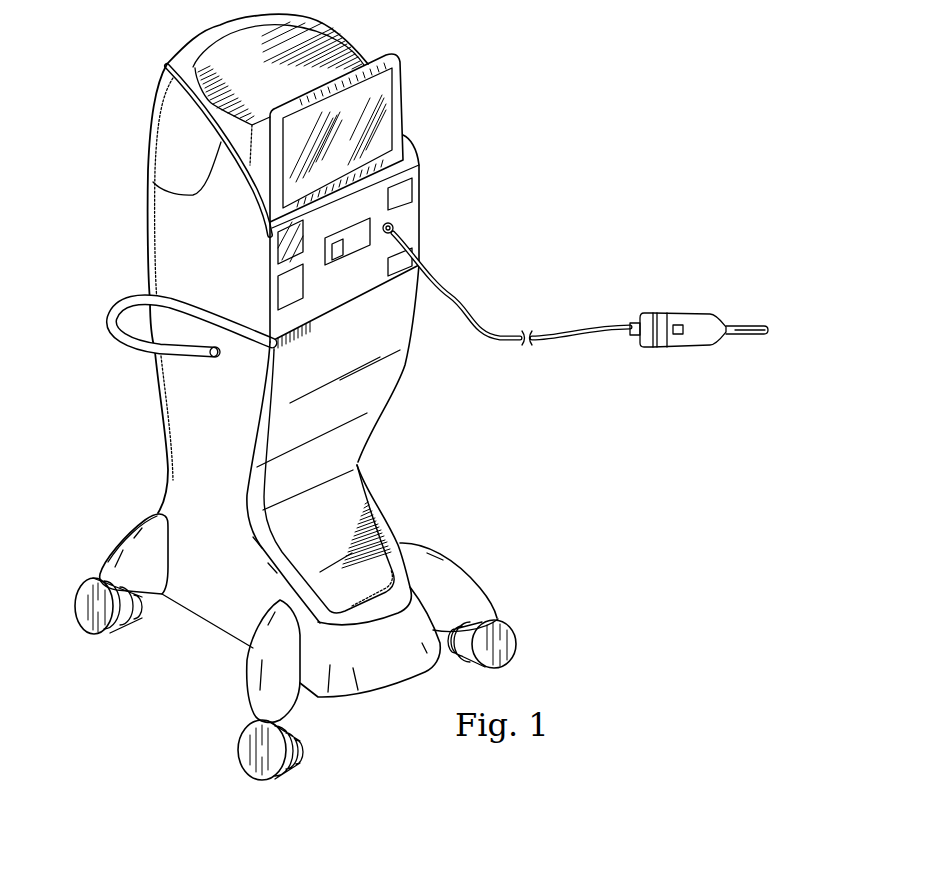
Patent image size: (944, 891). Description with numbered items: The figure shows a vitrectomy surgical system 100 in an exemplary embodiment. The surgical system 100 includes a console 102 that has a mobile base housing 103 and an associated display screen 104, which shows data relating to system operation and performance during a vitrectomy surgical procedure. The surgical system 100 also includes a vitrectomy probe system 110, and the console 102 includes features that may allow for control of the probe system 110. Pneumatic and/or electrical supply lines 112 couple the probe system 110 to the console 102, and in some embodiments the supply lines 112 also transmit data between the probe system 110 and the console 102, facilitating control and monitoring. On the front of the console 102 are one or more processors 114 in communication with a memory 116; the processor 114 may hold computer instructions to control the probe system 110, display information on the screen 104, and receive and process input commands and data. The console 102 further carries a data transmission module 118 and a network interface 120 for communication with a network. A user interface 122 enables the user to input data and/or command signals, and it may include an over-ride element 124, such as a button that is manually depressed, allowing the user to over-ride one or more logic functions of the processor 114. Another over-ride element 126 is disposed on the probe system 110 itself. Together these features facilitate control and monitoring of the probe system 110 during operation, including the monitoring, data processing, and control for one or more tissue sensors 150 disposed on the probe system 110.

The vitrectomy surgical system 100 is at (415, 397).
The console 102 is at (279, 397).
The mobile base housing 103 is at (160, 404).
The display screen 104 is at (405, 83).
The vitrectomy probe system 110 is at (709, 315).
The supply lines 112 is at (497, 335).
The processor 114 is at (277, 249).
The memory 116 is at (277, 289).
The data transmission module 118 is at (405, 192).
The network interface 120 is at (398, 262).
The user interface 122 is at (360, 246).
The over-ride element 124 is at (340, 256).
The over-ride element 126 is at (678, 337).
The tissue sensor 150 is at (755, 326).